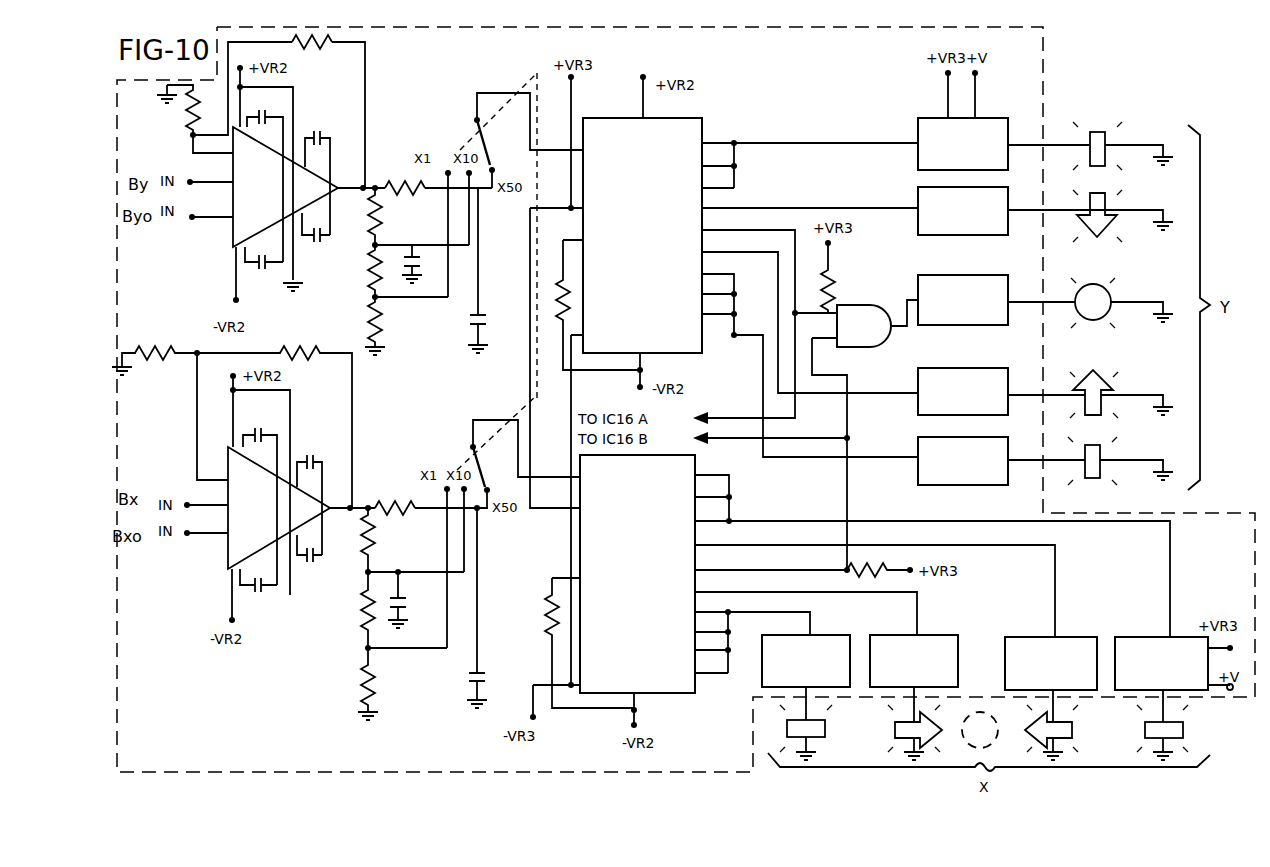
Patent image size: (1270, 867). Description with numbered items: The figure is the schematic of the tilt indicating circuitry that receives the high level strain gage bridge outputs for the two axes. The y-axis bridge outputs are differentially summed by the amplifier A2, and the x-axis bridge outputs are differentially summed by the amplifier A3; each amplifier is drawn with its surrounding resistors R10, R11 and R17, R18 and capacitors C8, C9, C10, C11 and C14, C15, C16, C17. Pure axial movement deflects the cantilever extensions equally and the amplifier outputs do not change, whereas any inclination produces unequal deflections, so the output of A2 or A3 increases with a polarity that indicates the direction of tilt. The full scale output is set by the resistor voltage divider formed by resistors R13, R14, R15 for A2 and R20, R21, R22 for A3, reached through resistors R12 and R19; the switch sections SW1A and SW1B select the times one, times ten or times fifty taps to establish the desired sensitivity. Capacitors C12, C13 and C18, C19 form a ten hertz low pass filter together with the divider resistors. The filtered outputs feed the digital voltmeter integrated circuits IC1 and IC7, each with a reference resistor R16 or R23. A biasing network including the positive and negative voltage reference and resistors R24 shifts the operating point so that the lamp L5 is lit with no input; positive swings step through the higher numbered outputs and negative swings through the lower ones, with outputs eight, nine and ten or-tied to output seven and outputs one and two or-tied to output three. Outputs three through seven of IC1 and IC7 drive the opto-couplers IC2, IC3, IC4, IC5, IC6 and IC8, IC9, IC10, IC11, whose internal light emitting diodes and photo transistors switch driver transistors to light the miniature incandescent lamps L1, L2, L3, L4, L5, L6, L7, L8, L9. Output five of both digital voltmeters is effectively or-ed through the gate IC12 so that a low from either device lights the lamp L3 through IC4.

The amplifier A2 is at (262, 187).
The amplifier A3 is at (257, 508).
The resistor R10 is at (313, 51).
The resistor R11 is at (176, 110).
The resistor R12 is at (405, 199).
The resistor R13 is at (388, 216).
The resistor R14 is at (354, 271).
The resistor R15 is at (386, 326).
The resistor R16 is at (587, 305).
The resistor R17 is at (274, 416).
The resistor R18 is at (154, 350).
The resistor R19 is at (395, 498).
The resistor R20 is at (382, 540).
The resistor R21 is at (351, 610).
The resistor R22 is at (351, 684).
The resistor R23 is at (570, 643).
The resistor R24 is at (867, 418).
The capacitor C8 is at (265, 176).
The capacitor C9 is at (317, 174).
The capacitor C10 is at (324, 234).
The capacitor C11 is at (264, 267).
The capacitor C12 is at (422, 264).
The capacitor C13 is at (461, 270).
The capacitor C14 is at (260, 497).
The capacitor C15 is at (311, 496).
The capacitor C16 is at (314, 557).
The capacitor C17 is at (258, 590).
The capacitor C18 is at (458, 606).
The capacitor C19 is at (411, 598).
The digital voltmeter integrated circuit IC1 is at (642, 235).
The opto-coupler IC2 is at (963, 144).
The opto-coupler IC3 is at (963, 211).
The opto-coupler IC4 is at (963, 300).
The opto-coupler IC5 is at (963, 391).
The opto-coupler IC6 is at (963, 461).
The digital voltmeter integrated circuit IC7 is at (637, 574).
The opto-coupler IC8 is at (806, 661).
The opto-coupler IC9 is at (914, 661).
The opto-coupler IC10 is at (1051, 663).
The opto-coupler IC11 is at (1174, 663).
The AND gate IC12 is at (809, 435).
The switch section SW1A is at (517, 116).
The switch section SW1B is at (510, 442).
The lamp L1 is at (1090, 139).
The lamp L2 is at (1090, 226).
The lamp L3 is at (1090, 303).
The lamp L4 is at (1090, 384).
The lamp L5 is at (1090, 470).
The lamp L6 is at (805, 724).
The lamp L7 is at (913, 724).
The lamp L8 is at (1059, 726).
The lamp L9 is at (1170, 726).